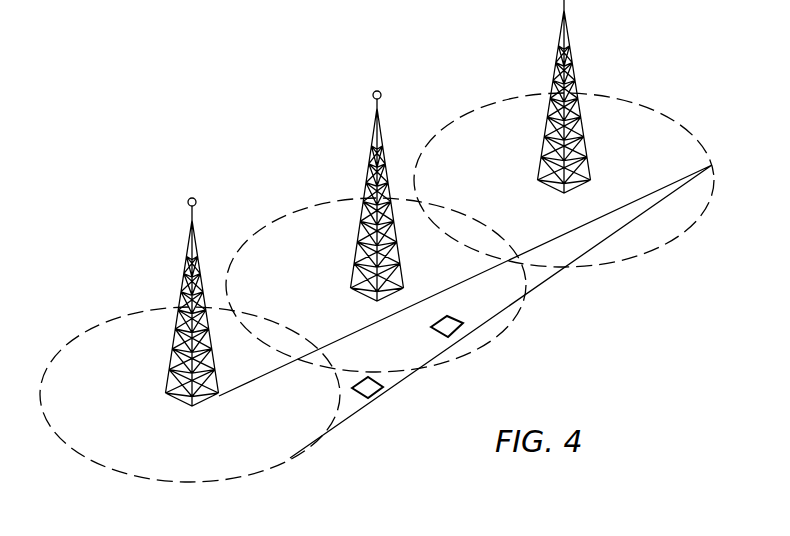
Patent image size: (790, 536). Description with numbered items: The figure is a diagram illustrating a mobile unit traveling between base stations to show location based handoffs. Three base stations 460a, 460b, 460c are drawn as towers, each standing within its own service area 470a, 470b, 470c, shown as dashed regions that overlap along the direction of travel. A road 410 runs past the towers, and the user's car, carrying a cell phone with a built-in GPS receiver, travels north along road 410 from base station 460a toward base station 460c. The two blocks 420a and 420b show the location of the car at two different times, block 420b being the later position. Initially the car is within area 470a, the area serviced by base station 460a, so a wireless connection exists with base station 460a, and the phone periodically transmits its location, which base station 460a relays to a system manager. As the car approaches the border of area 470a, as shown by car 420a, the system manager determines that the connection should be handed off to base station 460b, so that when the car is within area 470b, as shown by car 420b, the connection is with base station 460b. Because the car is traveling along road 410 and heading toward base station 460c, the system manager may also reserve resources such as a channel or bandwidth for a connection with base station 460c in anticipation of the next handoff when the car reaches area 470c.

The road 410 is at (545, 283).
The car at first time 420a is at (370, 390).
The car at later time 420b is at (452, 328).
The base station 460a is at (185, 265).
The base station 460b is at (372, 158).
The base station 460c is at (558, 50).
The area 470a is at (88, 327).
The area 470b is at (275, 222).
The area 470c is at (461, 115).